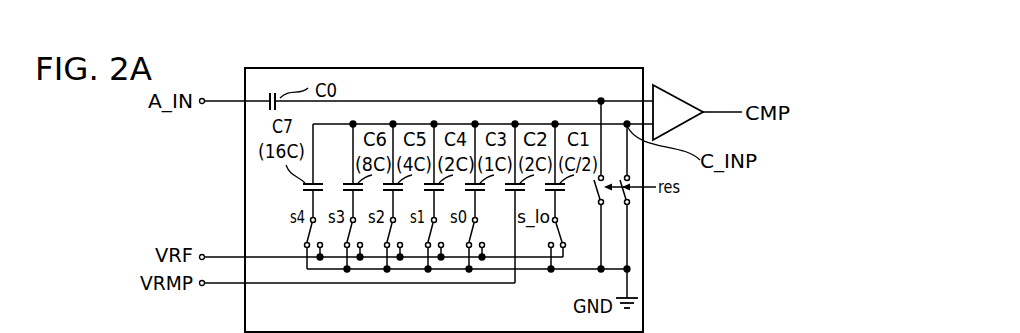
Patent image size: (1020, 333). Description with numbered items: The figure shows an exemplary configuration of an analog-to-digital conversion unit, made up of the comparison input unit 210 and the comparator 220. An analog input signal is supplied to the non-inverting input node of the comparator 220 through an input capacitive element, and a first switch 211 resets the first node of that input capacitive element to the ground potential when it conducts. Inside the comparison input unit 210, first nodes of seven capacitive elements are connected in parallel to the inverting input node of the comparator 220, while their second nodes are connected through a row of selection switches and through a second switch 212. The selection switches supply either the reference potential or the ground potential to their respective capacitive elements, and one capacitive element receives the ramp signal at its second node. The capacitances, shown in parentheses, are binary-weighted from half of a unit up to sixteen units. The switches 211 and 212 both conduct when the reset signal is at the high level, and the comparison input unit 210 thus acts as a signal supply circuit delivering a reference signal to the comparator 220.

The comparison input unit 210 is at (313, 68).
The comparator 220 is at (680, 95).
The switch 211 is at (596, 189).
The switch 212 is at (636, 194).